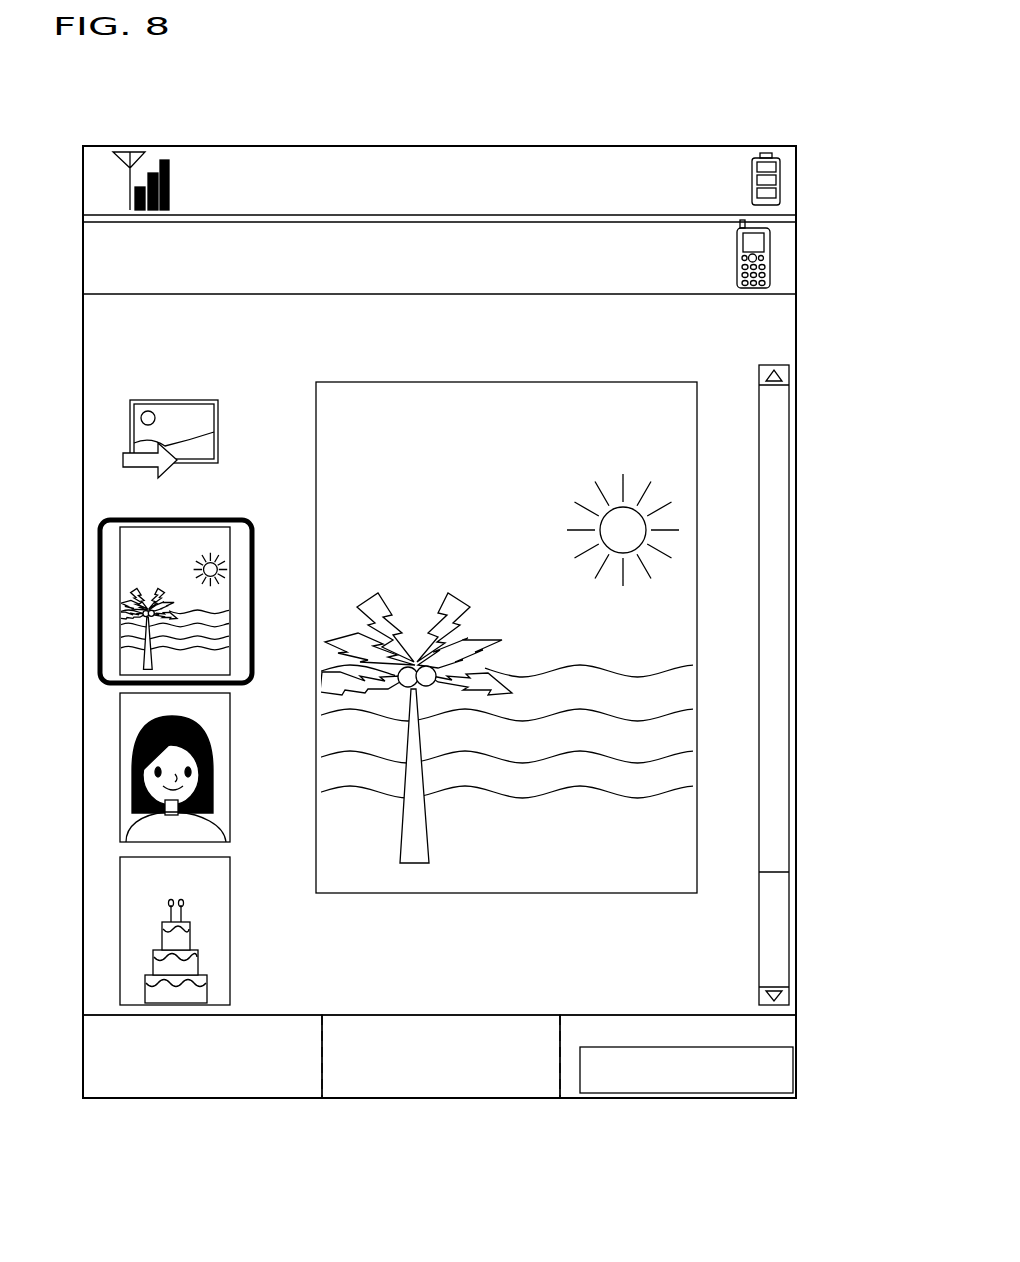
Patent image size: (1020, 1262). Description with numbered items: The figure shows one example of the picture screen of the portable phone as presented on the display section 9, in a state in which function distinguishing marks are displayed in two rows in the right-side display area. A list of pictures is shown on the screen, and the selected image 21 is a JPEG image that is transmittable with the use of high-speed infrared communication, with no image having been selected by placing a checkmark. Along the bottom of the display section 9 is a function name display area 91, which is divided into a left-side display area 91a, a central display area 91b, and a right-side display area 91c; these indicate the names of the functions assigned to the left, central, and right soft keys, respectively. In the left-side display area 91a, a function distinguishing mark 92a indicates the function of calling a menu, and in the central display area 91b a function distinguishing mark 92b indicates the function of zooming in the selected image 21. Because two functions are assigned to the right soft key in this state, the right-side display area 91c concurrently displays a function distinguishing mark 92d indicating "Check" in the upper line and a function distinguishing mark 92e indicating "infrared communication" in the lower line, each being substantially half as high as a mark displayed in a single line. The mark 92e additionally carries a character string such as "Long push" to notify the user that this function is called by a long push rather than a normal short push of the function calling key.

The display section 9 is at (686, 114).
The image 21 is at (130, 565).
The function name display area 91 is at (78, 1040).
The left-side display area 91a is at (267, 1105).
The central display area 91b is at (518, 1105).
The right-side display area 91c is at (754, 1105).
The function distinguishing mark 92a is at (183, 1090).
The function distinguishing mark 92b is at (437, 1090).
The function distinguishing mark 92d is at (790, 1032).
The function distinguishing mark 92e is at (792, 1060).